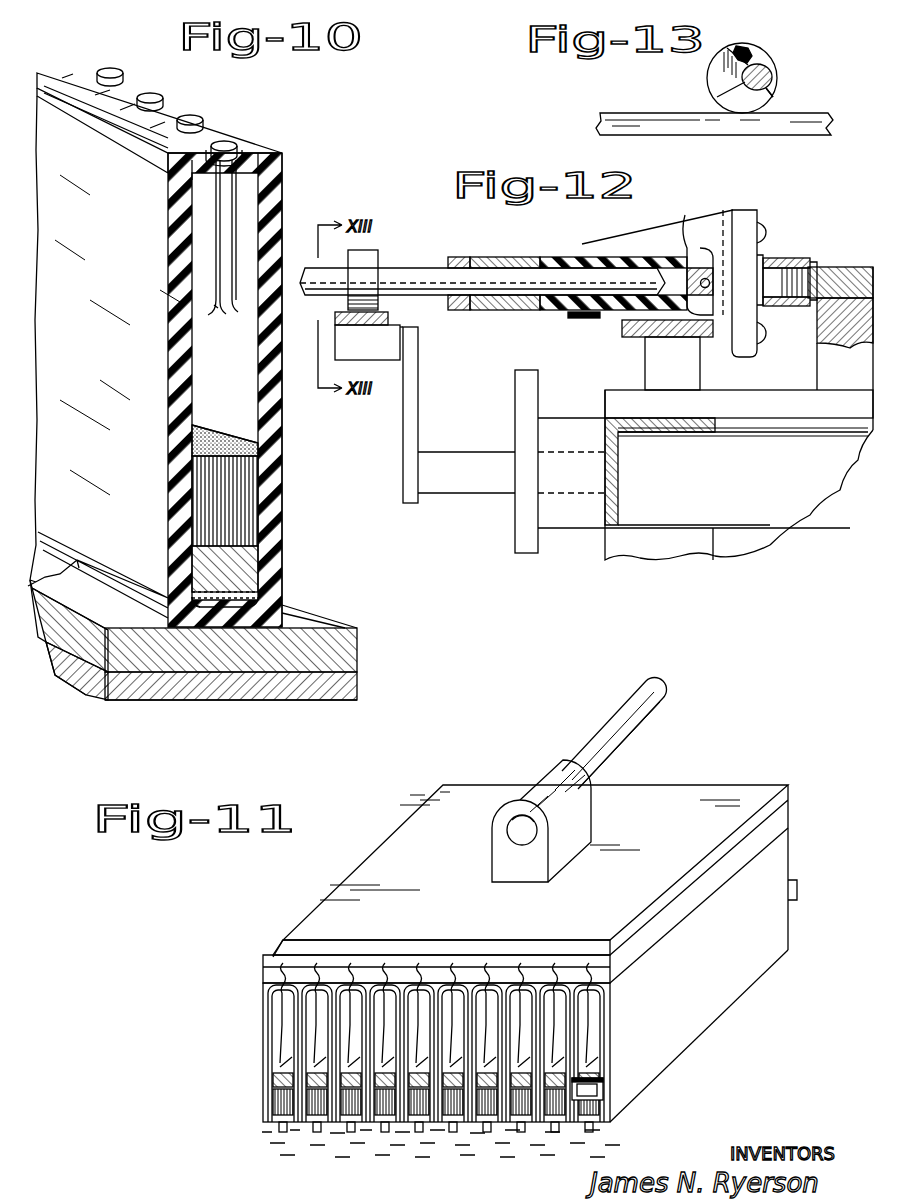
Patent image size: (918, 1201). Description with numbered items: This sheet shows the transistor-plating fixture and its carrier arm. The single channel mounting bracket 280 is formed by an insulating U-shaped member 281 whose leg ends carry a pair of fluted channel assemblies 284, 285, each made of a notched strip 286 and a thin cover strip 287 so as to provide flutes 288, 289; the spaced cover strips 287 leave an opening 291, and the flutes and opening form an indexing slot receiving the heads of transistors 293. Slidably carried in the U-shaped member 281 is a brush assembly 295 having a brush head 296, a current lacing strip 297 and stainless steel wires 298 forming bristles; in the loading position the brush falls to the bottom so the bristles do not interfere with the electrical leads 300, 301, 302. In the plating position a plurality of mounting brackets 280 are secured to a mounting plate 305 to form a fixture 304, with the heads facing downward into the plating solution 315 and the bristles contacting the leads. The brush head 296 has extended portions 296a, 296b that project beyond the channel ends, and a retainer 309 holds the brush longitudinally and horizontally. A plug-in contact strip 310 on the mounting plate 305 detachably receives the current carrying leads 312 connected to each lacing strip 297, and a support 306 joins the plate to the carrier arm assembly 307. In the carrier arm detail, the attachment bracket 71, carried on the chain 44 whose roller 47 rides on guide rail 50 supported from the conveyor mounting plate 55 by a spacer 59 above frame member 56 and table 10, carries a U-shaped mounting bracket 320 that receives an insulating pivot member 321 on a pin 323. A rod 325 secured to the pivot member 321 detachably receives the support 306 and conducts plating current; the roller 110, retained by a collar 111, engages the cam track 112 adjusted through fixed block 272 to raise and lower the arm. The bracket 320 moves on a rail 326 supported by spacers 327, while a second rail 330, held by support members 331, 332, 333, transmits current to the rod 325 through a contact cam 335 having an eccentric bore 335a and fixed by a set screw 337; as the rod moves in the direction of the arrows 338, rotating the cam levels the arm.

In FIG. 12, the table 10 is at (760, 218).
In FIG. 12, the chain 44 is at (788, 304).
In FIG. 12, the roller 47 is at (778, 262).
In FIG. 12, the chain roller guide rail 50 is at (832, 268).
In FIG. 12, the conveyor mounting plate 55 is at (797, 408).
In FIG. 12, the frame member 56 is at (739, 475).
In FIG. 12, the spacer 59 is at (820, 370).
In FIG. 12, the carrier arm attachment bracket 71 is at (744, 218).
In FIG. 12, the roller 110 is at (492, 256).
In FIG. 12, the collar 111 is at (456, 256).
In FIG. 12, the cam track section 112 is at (538, 389).
In FIG. 12, the fixed block 272 is at (567, 520).
In FIG. 10, the single channel mounting bracket 280 is at (283, 185).
In FIG. 11, the single channel mounting bracket 280 is at (262, 1040).
In FIG. 10, the U-shaped member 281 is at (282, 436).
In FIG. 10, the fluted channel assembly 284 is at (110, 126).
In FIG. 10, the fluted channel assembly 285 is at (283, 162).
In FIG. 10, the notched strip 286 is at (146, 150).
In FIG. 10, the cover strip 287 is at (68, 75).
In FIG. 10, the flute 288 is at (178, 170).
In FIG. 10, the flute 289 is at (256, 152).
In FIG. 10, the opening 291 is at (163, 105).
In FIG. 10, the transistor 293 is at (225, 142).
In FIG. 11, the transistor 293 is at (278, 1135).
In FIG. 10, the brush assembly 295 is at (186, 495).
In FIG. 11, the brush assembly 295 is at (256, 1102).
In FIG. 10, the brush head 296 is at (192, 560).
In FIG. 11, the brush head 296 is at (268, 1082).
In FIG. 11, the extended portion 296a is at (600, 1094).
In FIG. 11, the extended portion 296b is at (798, 888).
In FIG. 10, the current lacing strip 297 is at (262, 585).
In FIG. 11, the current lacing strip 297 is at (290, 1062).
In FIG. 10, the wires 298 is at (205, 440).
In FIG. 11, the wires 298 is at (278, 1112).
In FIG. 10, the electrical lead 300 is at (211, 246).
In FIG. 10, the electrical lead 301 is at (226, 315).
In FIG. 10, the electrical lead 302 is at (238, 313).
In FIG. 10, the fixture 304 is at (300, 702).
In FIG. 11, the fixture 304 is at (348, 874).
In FIG. 10, the mounting plate 305 is at (358, 655).
In FIG. 11, the mounting plate 305 is at (785, 795).
In FIG. 11, the support 306 is at (580, 808).
In FIG. 12, the carrier arm assembly 307 is at (434, 300).
In FIG. 11, the carrier arm assembly 307 is at (648, 720).
In FIG. 11, the retainer 309 is at (598, 1080).
In FIG. 10, the plug-in contact strip 310 is at (358, 695).
In FIG. 11, the plug-in contact strip 310 is at (372, 950).
In FIG. 11, the current carrying lead 312 is at (280, 1008).
In FIG. 11, the plating solution 315 is at (358, 1150).
In FIG. 12, the U-shaped mounting bracket 320 is at (668, 225).
In FIG. 12, the pivot member 321 is at (553, 256).
In FIG. 12, the pin 323 is at (704, 278).
In FIG. 13, the rod 325 is at (742, 79).
In FIG. 12, the rod 325 is at (390, 272).
In FIG. 11, the rod 325 is at (640, 690).
In FIG. 12, the rail 326 is at (622, 330).
In FIG. 12, the spacer 327 is at (645, 370).
In FIG. 13, the second rail 330 is at (722, 135).
In FIG. 12, the second rail 330 is at (388, 316).
In FIG. 12, the support member 331 is at (473, 494).
In FIG. 12, the support member 332 is at (419, 404).
In FIG. 12, the support member 333 is at (367, 342).
In FIG. 13, the contact cam 335 is at (765, 70).
In FIG. 12, the contact cam 335 is at (365, 257).
In FIG. 13, the eccentric bore 335a is at (774, 97).
In FIG. 13, the set screw 337 is at (752, 48).
In FIG. 13, the arrows 338 is at (681, 84).